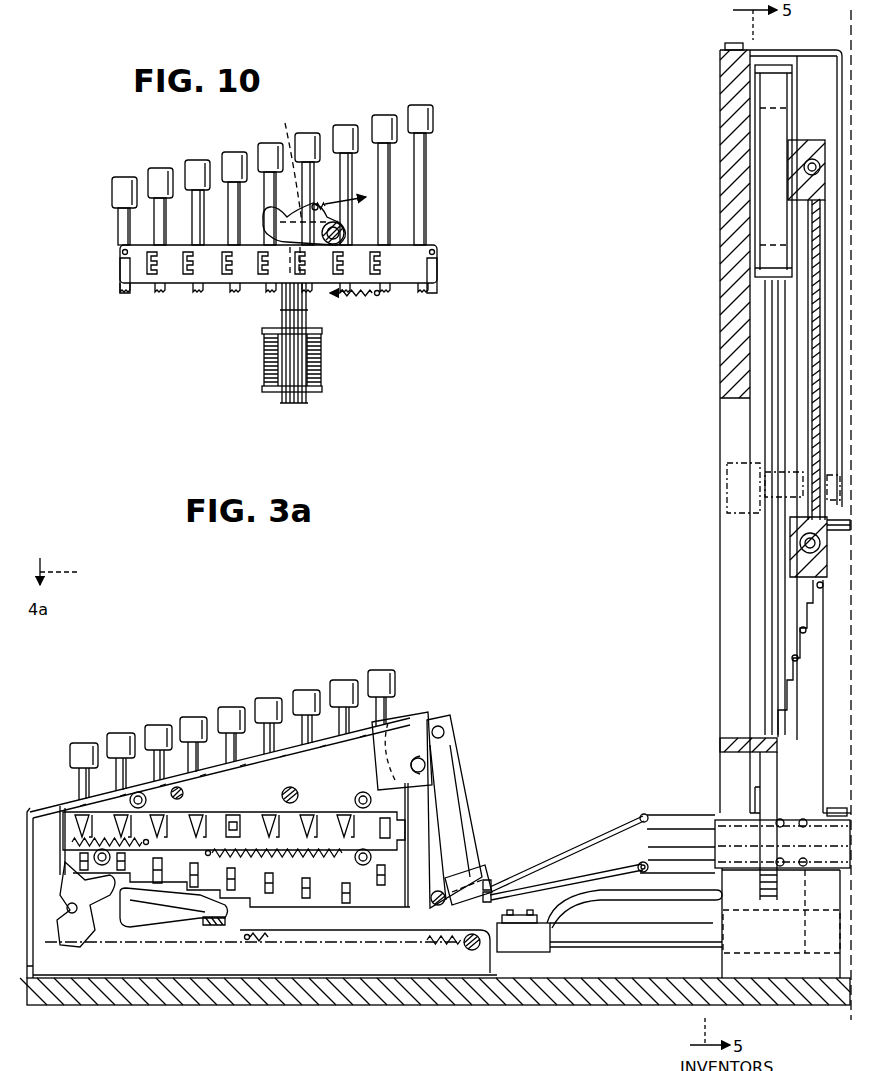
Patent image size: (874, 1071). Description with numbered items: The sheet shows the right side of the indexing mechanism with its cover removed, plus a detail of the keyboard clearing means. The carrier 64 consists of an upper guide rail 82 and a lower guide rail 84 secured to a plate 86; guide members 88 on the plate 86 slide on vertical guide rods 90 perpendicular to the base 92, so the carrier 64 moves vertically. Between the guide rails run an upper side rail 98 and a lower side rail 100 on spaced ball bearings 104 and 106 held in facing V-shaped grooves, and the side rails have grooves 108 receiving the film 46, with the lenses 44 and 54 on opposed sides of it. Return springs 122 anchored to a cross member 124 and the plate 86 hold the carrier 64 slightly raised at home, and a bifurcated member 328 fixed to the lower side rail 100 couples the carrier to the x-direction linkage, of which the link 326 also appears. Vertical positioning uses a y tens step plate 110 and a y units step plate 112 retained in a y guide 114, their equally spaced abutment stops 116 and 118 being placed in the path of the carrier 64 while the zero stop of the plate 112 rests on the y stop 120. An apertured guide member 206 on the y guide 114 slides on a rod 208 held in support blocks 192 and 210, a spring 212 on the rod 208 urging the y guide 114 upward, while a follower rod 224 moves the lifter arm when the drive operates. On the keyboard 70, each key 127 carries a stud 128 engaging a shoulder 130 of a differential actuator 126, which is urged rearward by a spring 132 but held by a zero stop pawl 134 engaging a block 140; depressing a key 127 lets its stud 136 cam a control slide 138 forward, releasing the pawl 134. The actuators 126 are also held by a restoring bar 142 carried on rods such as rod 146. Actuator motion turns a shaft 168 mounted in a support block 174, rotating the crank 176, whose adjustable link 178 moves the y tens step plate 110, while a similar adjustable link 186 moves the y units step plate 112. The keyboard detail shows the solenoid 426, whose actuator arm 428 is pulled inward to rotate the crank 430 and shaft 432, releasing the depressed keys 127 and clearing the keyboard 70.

In FIG. 10, the crank 430 is at (287, 195).
In FIG. 10, the shaft 432 is at (345, 233).
In FIG. 10, the actuator arm 428 is at (300, 297).
In FIG. 10, the solenoid 426 is at (322, 362).
In FIG. 3a, the keyboard 70 is at (225, 697).
In FIG. 3a, the keys 127 is at (340, 680).
In FIG. 3a, the control slides 138 is at (100, 817).
In FIG. 3a, the studs 136 is at (343, 820).
In FIG. 3a, the stud 128 is at (386, 872).
In FIG. 3a, the zero stop pawls 134 is at (64, 900).
In FIG. 3a, the blocks 140 is at (118, 942).
In FIG. 3a, the shoulders 130 is at (250, 920).
In FIG. 3a, the differential actuator 126 is at (308, 925).
In FIG. 3a, the springs 132 is at (445, 950).
In FIG. 3a, the support block 174 is at (392, 765).
In FIG. 3a, the shaft 168 is at (430, 770).
In FIG. 3a, the crank 176 is at (441, 863).
In FIG. 3a, the adjustable link 178 is at (567, 848).
In FIG. 3a, the adjustable link 186 is at (612, 878).
In FIG. 3a, the restoring bar 142 is at (526, 948).
In FIG. 3a, the follower rod 224 is at (610, 900).
In FIG. 3a, the rod 146 is at (586, 948).
In FIG. 3a, the base 92 is at (135, 1003).
In FIG. 3a, the cross member 124 is at (721, 141).
In FIG. 3a, the return springs 122 is at (775, 125).
In FIG. 3a, the carrier 64 is at (755, 290).
In FIG. 3a, the guide members 88 is at (770, 305).
In FIG. 3a, the plate 86 is at (793, 325).
In FIG. 3a, the film 46 is at (820, 362).
In FIG. 3a, the upper side rail 98 is at (826, 173).
In FIG. 3a, the upper guide rail 82 is at (824, 160).
In FIG. 3a, the ball bearings 104 is at (805, 160).
In FIG. 3a, the grooves 108 is at (797, 520).
In FIG. 3a, the lens 44 is at (840, 477).
In FIG. 3a, the lens 54 is at (727, 477).
In FIG. 3a, the lower side rail 100 is at (803, 523).
In FIG. 3a, the ball bearings 106 is at (797, 547).
In FIG. 3a, the lower guide rail 84 is at (789, 560).
In FIG. 3a, the bifurcated member 328 is at (790, 575).
In FIG. 3a, the abutment stops 116 is at (800, 632).
In FIG. 3a, the y tens step plate 110 is at (800, 670).
In FIG. 3a, the vertical guide rods 90 is at (772, 697).
In FIG. 3a, the support block 210 is at (740, 738).
In FIG. 3a, the guide member 206 is at (768, 785).
In FIG. 3a, the y guide 114 is at (713, 830).
In FIG. 3a, the link 326 is at (832, 805).
In FIG. 3a, the abutment stops 118 is at (812, 897).
In FIG. 3a, the y stop 120 is at (835, 900).
In FIG. 3a, the spring 212 is at (762, 898).
In FIG. 3a, the rod 208 is at (763, 883).
In FIG. 3a, the y units step plate 112 is at (797, 880).
In FIG. 3a, the support block 192 is at (725, 962).